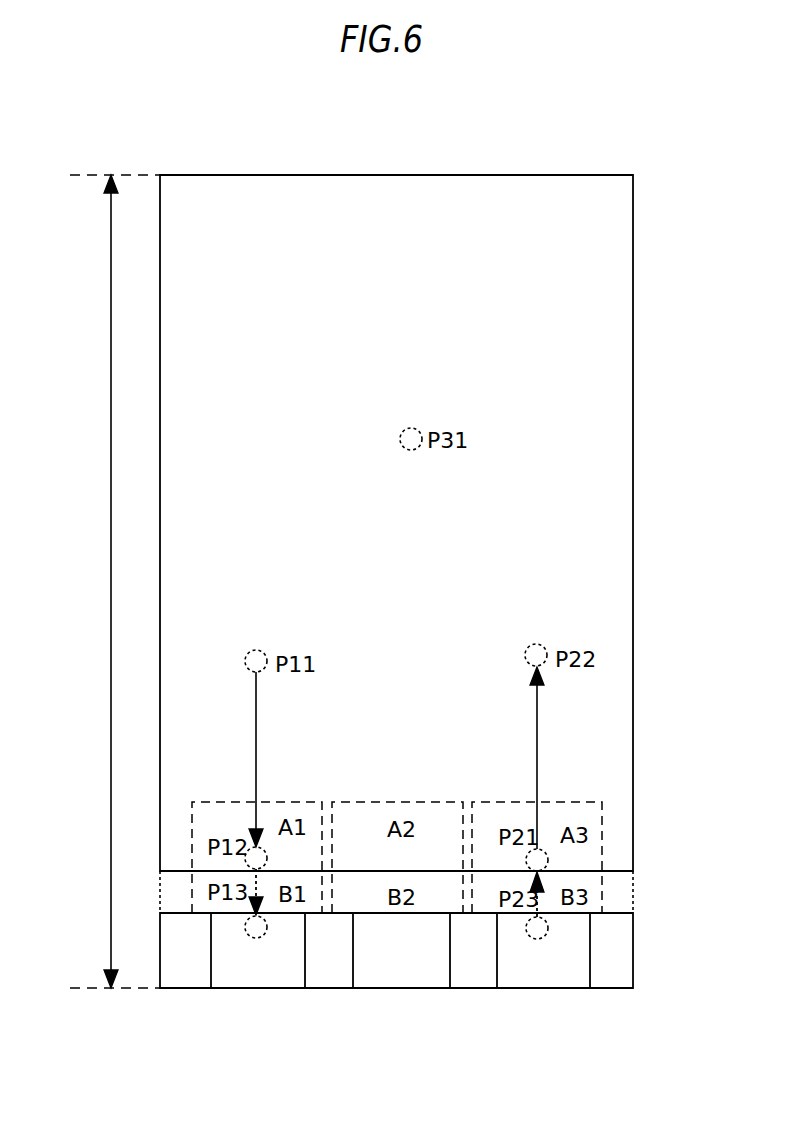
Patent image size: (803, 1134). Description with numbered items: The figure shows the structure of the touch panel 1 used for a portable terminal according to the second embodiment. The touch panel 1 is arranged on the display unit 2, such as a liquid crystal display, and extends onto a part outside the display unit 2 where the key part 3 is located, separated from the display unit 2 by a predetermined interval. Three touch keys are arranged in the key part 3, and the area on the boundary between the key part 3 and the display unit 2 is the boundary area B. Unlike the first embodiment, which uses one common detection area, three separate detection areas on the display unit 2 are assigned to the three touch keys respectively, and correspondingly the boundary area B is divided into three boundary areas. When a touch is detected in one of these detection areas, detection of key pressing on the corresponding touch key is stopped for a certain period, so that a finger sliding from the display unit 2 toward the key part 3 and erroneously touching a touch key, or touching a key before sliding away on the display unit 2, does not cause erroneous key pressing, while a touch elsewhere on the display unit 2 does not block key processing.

The touch panel 1 is at (110, 510).
The display unit 2 is at (633, 213).
The key part 3 is at (428, 977).
The boundary area B is at (633, 905).